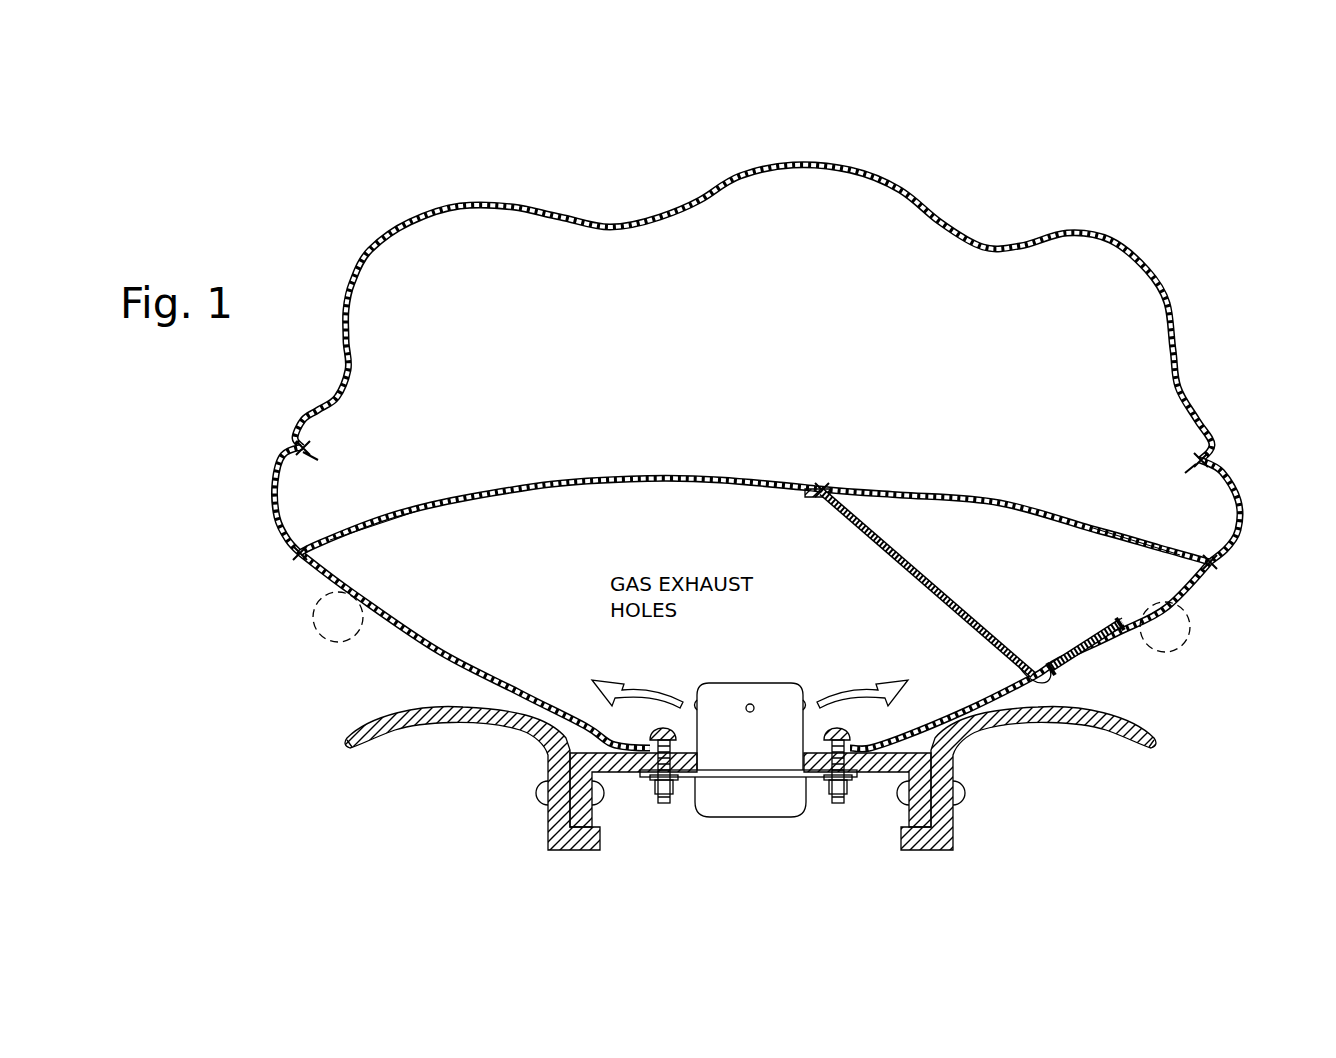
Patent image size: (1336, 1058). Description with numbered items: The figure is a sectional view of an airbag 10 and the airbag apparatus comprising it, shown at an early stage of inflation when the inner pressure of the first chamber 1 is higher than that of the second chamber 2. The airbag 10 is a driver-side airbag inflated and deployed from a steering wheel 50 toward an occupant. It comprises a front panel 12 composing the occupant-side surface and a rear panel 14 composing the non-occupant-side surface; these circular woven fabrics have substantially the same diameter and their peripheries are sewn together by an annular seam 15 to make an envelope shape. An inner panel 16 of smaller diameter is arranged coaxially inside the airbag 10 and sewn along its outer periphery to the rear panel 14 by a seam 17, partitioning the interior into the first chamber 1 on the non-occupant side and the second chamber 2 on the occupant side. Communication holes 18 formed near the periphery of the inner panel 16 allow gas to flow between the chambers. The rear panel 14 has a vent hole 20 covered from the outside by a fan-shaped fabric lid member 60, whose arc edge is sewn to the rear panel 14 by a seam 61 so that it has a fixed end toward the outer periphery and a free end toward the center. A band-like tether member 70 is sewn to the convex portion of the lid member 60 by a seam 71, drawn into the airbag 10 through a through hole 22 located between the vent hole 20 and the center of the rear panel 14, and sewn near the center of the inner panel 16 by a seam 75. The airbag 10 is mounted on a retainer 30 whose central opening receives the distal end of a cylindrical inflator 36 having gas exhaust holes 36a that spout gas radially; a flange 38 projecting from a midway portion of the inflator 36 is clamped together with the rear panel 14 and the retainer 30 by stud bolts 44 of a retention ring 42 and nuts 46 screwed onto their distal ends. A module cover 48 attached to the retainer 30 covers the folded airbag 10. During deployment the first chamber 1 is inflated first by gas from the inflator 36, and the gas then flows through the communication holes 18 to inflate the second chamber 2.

The first chamber 1 is at (719, 544).
The second chamber 2 is at (746, 309).
The airbag 10 is at (960, 185).
The front panel 12 is at (614, 220).
The rear panel 14 is at (433, 645).
The seam 15 is at (312, 446).
The inner panel 16 is at (620, 478).
The seam 17 is at (297, 556).
The communication holes 18 is at (383, 521).
The vent hole 20 is at (1080, 633).
The through hole 22 is at (1010, 675).
The retainer 30 is at (778, 778).
The inflator 36 is at (748, 758).
The gas exhaust holes 36a is at (745, 707).
The flange 38 is at (706, 790).
The retention ring 42 is at (822, 735).
The stud bolts 44 is at (663, 806).
The nuts 46 is at (652, 790).
The module cover 48 is at (347, 745).
The steering wheel 50 is at (315, 630).
The lid member 60 is at (1150, 649).
The seam 61 is at (1118, 626).
The tether member 70 is at (905, 575).
The seam 71 is at (1062, 670).
The seam 75 is at (820, 486).